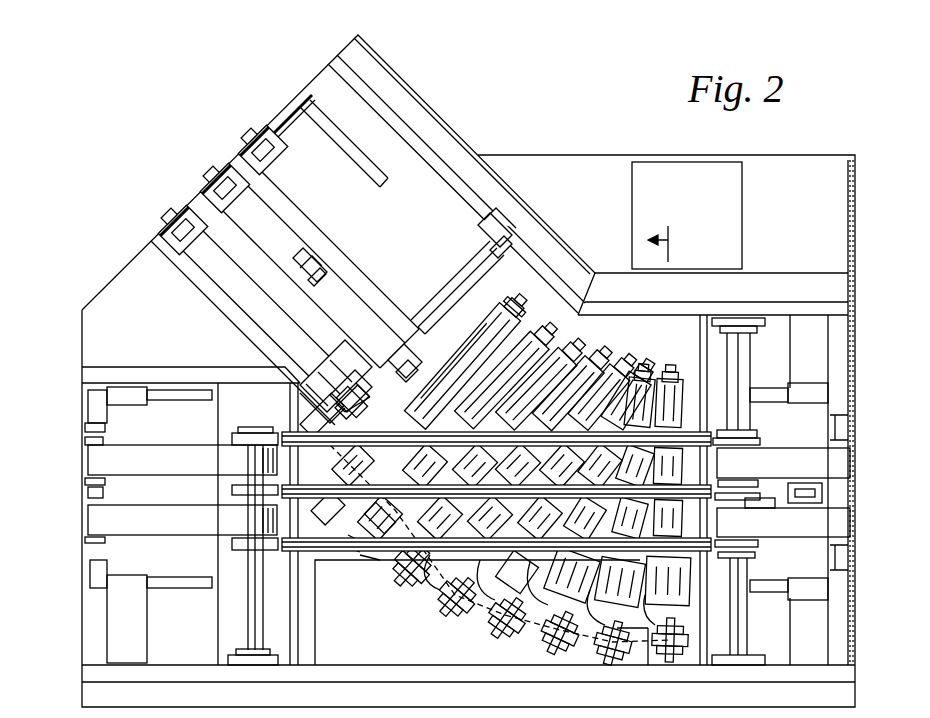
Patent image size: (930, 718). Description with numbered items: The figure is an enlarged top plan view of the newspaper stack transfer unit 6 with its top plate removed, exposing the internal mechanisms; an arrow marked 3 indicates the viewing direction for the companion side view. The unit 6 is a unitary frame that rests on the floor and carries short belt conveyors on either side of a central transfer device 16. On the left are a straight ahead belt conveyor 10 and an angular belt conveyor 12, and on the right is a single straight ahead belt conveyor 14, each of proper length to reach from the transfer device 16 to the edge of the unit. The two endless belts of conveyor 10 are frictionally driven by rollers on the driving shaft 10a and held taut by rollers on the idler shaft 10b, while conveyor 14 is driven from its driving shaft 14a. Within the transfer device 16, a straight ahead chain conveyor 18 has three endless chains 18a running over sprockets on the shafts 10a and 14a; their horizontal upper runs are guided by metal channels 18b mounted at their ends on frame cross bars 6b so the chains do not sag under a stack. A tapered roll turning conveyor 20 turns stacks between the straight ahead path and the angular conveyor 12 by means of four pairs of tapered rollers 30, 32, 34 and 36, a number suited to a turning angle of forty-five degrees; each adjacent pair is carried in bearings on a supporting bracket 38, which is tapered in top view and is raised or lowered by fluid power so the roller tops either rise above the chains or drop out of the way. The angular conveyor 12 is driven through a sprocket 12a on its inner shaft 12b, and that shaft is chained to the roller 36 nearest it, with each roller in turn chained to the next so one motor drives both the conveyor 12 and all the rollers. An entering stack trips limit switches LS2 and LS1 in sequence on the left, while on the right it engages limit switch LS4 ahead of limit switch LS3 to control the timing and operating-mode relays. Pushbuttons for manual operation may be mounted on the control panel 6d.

The view direction arrow for FIG. 3 is at (669, 244).
The newspaper stack transfer unit 6 is at (140, 312).
The frame cross bars 6b is at (700, 316).
The control panel 6d is at (743, 200).
The straight ahead belt conveyor 10 is at (88, 518).
The driving shaft 10a is at (250, 620).
The idler shaft 10b is at (104, 540).
The angular belt conveyor 12 is at (200, 200).
The sprocket 12a is at (303, 368).
The inner shaft 12b is at (474, 258).
The right-hand straight ahead belt conveyor 14 is at (850, 520).
The driving shaft 14a is at (750, 370).
The transfer device 16 is at (414, 626).
The straight ahead chain conveyor 18 is at (322, 555).
The endless chains 18a is at (305, 556).
The metal channels 18b is at (362, 560).
The tapered roll turning conveyor 20 is at (492, 311).
The tapered rollers 30 is at (650, 372).
The tapered rollers 32 is at (624, 370).
The tapered rollers 34 is at (560, 352).
The tapered rollers 36 is at (536, 318).
The supporting bracket 38 is at (540, 605).
The limit switch LS1 is at (422, 358).
The limit switch LS2 is at (315, 262).
The limit switch LS3 is at (770, 510).
The limit switch LS4 is at (795, 483).